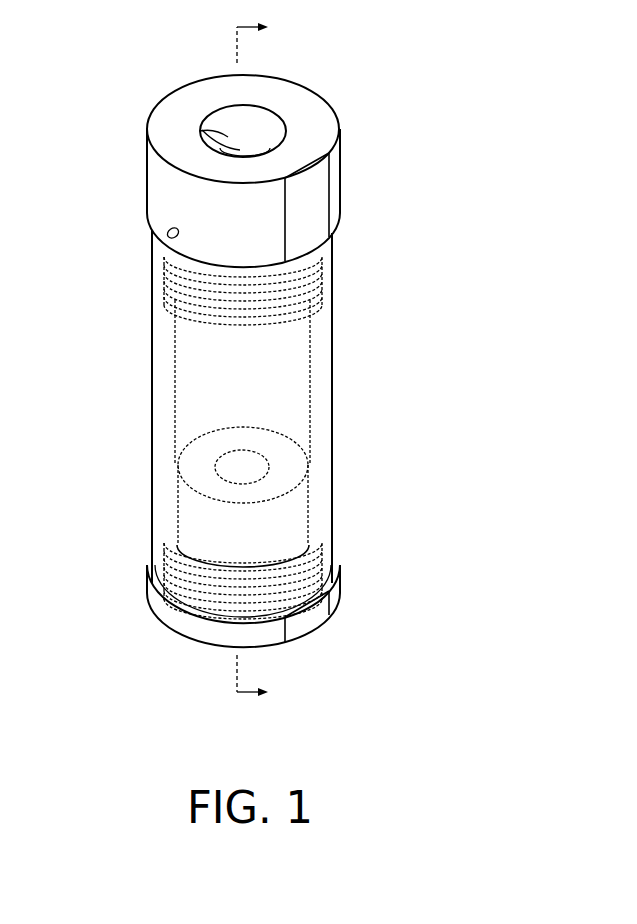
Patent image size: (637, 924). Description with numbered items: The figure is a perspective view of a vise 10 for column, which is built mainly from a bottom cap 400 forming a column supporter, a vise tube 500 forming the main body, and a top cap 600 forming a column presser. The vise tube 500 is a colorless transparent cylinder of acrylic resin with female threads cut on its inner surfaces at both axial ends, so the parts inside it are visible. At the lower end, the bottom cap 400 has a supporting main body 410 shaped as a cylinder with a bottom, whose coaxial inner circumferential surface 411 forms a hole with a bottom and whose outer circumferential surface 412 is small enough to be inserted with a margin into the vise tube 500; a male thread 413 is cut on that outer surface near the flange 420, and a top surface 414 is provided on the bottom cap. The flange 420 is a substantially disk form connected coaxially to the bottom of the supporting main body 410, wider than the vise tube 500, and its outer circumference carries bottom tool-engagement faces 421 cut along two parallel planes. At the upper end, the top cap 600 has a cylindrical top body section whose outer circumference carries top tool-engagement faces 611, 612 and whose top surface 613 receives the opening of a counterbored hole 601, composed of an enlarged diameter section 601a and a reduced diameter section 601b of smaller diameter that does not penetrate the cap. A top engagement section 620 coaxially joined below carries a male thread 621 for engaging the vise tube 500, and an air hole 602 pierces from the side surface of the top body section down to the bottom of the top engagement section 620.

The vise for column 10 is at (402, 133).
The top cap 600 is at (345, 177).
The counterbored hole 601 is at (258, 126).
The enlarged diameter section 601a is at (277, 137).
The reduced diameter section 601b is at (200, 130).
The air hole 602 is at (172, 232).
The top tool-engagement face 611 is at (330, 207).
The top tool-engagement face 612 is at (177, 97).
The top surface 613 is at (260, 97).
The top engagement section 620 is at (158, 270).
The male thread 621 is at (322, 280).
The vise tube 500 is at (344, 383).
The bottom cap 400 is at (170, 447).
The supporting main body 410 is at (174, 497).
The inner circumferential surface 411 is at (265, 460).
The outer circumferential surface 412 is at (308, 512).
The male thread 413 is at (322, 572).
The top surface 414 is at (230, 437).
The flange 420 is at (175, 622).
The bottom tool-engagement face 421 is at (300, 623).